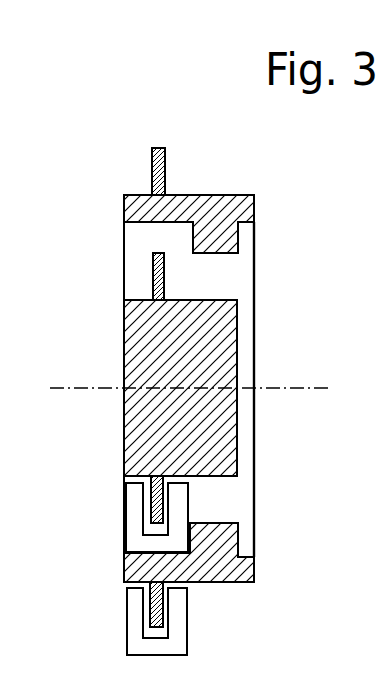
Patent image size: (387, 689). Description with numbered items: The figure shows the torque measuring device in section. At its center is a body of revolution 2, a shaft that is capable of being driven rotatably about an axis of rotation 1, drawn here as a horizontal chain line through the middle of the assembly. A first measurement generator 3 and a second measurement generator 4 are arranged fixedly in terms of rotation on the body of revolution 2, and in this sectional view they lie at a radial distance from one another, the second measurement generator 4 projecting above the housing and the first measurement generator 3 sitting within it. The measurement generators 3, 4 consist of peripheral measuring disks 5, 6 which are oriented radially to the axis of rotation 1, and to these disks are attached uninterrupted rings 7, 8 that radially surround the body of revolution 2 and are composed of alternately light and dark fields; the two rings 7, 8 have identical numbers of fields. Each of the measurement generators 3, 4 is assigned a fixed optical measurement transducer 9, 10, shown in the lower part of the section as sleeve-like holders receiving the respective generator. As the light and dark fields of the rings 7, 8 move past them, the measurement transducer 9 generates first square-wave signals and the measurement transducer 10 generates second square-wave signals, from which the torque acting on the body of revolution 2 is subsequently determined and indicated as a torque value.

The axis of rotation 1 is at (302, 386).
The body of revolution 2 is at (148, 363).
The first measurement generator 3 is at (146, 264).
The second measurement generator 4 is at (146, 163).
The peripheral measuring disk 5 is at (152, 287).
The peripheral measuring disk 6 is at (152, 176).
The ring 7 is at (152, 287).
The ring 8 is at (152, 176).
The optical measurement transducer 9 is at (135, 535).
The optical measurement transducer 10 is at (135, 633).